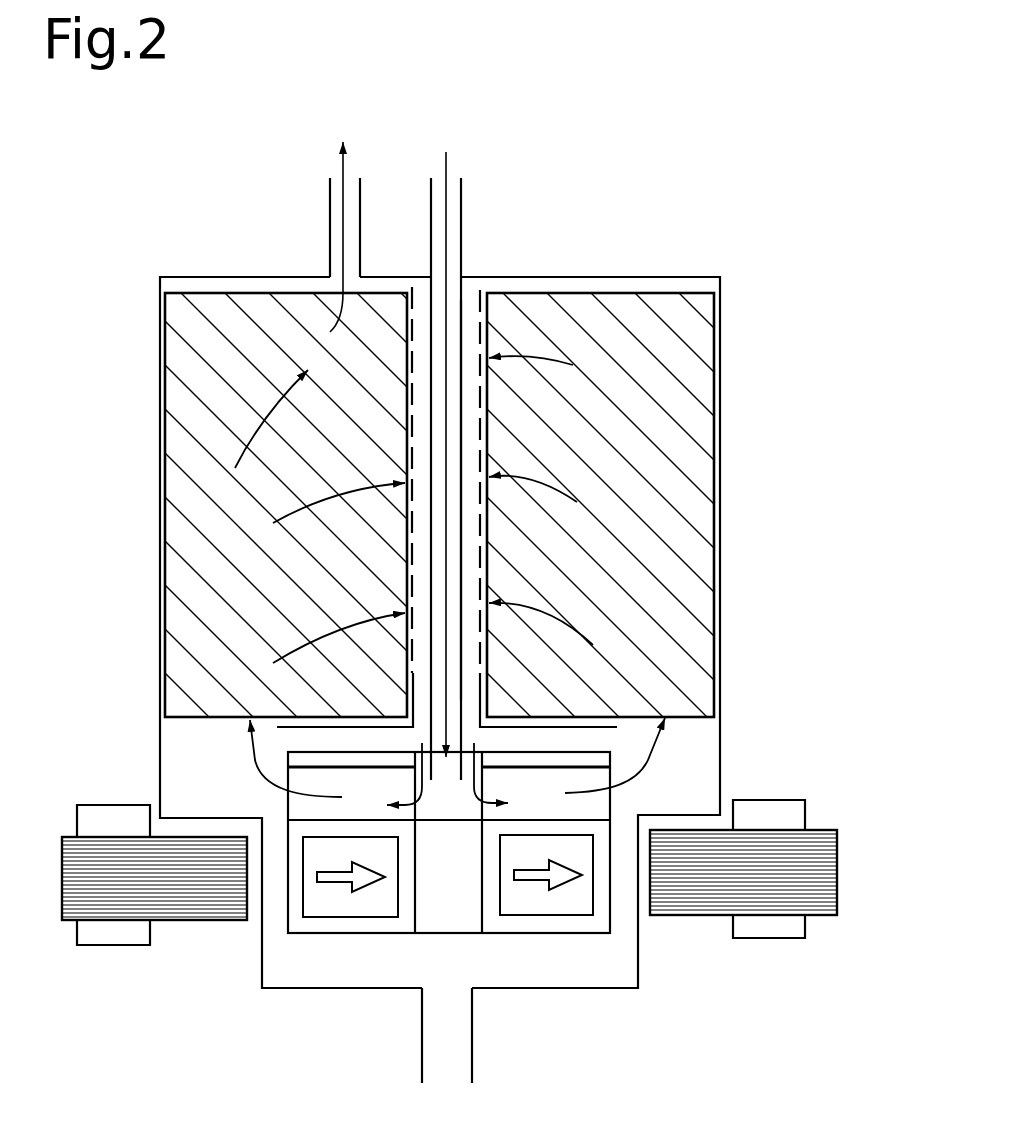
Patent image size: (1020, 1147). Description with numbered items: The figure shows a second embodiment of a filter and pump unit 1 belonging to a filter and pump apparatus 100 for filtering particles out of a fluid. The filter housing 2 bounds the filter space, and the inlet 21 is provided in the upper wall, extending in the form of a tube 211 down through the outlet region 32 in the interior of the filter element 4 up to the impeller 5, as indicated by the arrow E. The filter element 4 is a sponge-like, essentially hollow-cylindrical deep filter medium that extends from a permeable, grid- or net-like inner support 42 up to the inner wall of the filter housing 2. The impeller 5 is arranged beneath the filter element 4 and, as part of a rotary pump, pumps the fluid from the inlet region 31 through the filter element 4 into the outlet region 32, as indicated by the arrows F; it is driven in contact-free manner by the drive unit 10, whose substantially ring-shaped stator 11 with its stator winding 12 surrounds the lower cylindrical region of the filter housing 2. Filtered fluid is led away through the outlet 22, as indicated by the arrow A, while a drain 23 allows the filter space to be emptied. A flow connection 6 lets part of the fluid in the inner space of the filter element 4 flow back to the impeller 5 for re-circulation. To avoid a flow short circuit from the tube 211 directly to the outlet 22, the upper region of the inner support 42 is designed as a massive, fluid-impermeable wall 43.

The filter and pump apparatus 100 is at (625, 120).
The filter and pump unit 1 is at (658, 270).
The filter housing 2 is at (160, 744).
The filter element 4 is at (188, 418).
The impeller 5 is at (613, 805).
The flow connection 6 is at (468, 703).
The drive unit 10 is at (122, 945).
The stator 11 is at (837, 872).
The stator winding 12 is at (773, 938).
The inlet 21 is at (462, 230).
The tube 211 is at (463, 410).
The outlet 22 is at (330, 247).
The drain 23 is at (472, 1047).
The inlet region 31 is at (188, 781).
The outlet region 32 is at (416, 293).
The inner support 42 is at (407, 638).
The fluid-impermeable wall 43 is at (480, 292).
The arrow indicating filtered fluid led away A is at (342, 172).
The arrow indicating fluid introduced E is at (447, 167).
The arrows indicating pumped fluid F is at (560, 493).